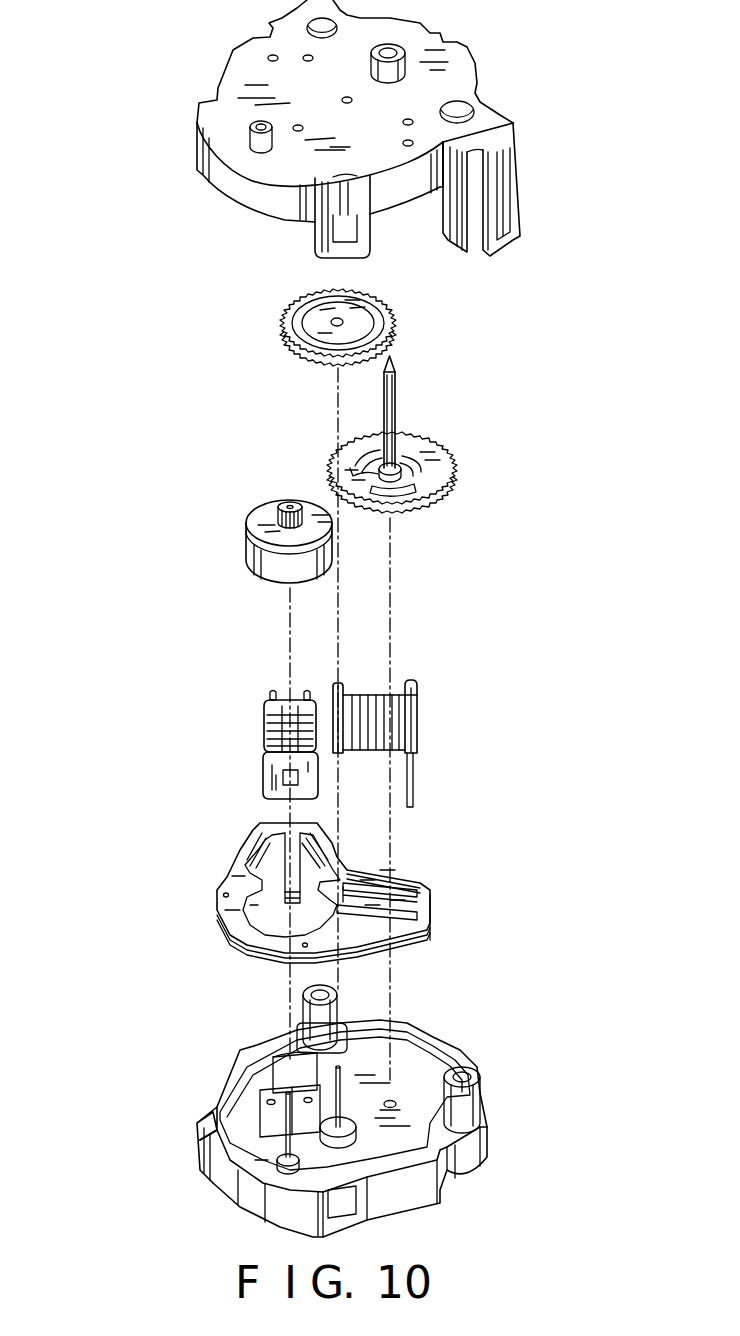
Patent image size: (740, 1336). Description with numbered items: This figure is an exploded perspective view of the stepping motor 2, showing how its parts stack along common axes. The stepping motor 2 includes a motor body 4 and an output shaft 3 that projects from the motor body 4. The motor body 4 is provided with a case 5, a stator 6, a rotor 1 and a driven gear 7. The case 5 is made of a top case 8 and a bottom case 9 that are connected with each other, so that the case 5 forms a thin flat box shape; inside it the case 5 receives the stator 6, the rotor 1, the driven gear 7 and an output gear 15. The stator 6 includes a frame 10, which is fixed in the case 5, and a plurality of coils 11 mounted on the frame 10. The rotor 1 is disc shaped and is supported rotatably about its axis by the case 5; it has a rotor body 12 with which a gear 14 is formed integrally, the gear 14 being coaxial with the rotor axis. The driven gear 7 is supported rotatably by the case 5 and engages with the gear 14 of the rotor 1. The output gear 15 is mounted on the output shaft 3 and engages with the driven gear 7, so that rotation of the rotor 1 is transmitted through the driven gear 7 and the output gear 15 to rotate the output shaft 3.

The rotor 1 is at (247, 477).
The stepping motor 2 is at (224, 42).
The output shaft 3 is at (396, 400).
The motor body 4 is at (557, 118).
The case 5 is at (65, 532).
The stator 6 is at (167, 694).
The driven gear 7 is at (397, 317).
The top case 8 is at (197, 155).
The bottom case 9 is at (197, 1138).
The frame 10 is at (215, 902).
The coils 11 is at (263, 723).
The rotor body 12 is at (248, 520).
The gear 14 is at (288, 500).
The output gear 15 is at (452, 462).